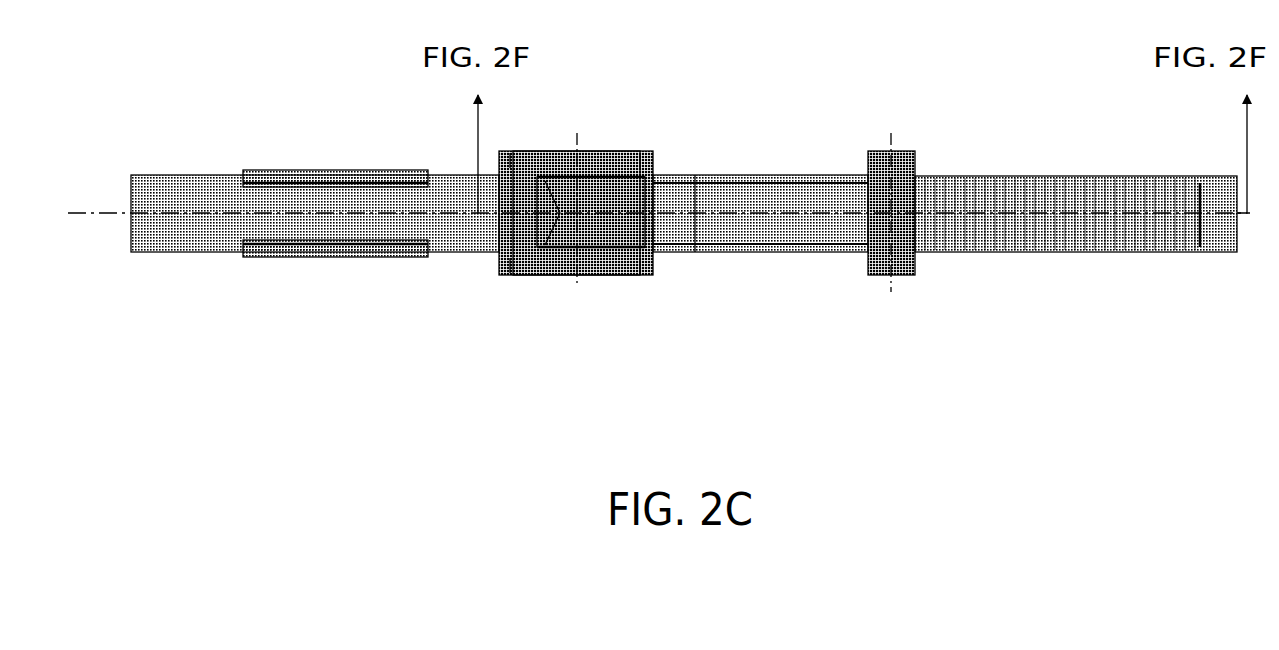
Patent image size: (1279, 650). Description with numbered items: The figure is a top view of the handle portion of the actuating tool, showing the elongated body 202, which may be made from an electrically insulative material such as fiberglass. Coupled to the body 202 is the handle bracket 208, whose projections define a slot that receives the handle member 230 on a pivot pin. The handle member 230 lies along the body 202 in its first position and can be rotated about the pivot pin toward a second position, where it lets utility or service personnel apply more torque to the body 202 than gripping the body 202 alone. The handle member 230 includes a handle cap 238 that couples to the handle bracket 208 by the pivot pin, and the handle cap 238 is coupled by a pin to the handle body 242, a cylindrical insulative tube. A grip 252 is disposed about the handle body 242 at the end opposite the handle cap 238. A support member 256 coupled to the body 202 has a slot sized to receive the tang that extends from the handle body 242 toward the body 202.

The body 202 is at (165, 175).
The handle bracket 208 is at (538, 277).
The handle cap 238 is at (620, 152).
The handle body 242 is at (742, 187).
The handle member 230 is at (830, 180).
The support member 256 is at (875, 276).
The grip 252 is at (1027, 173).